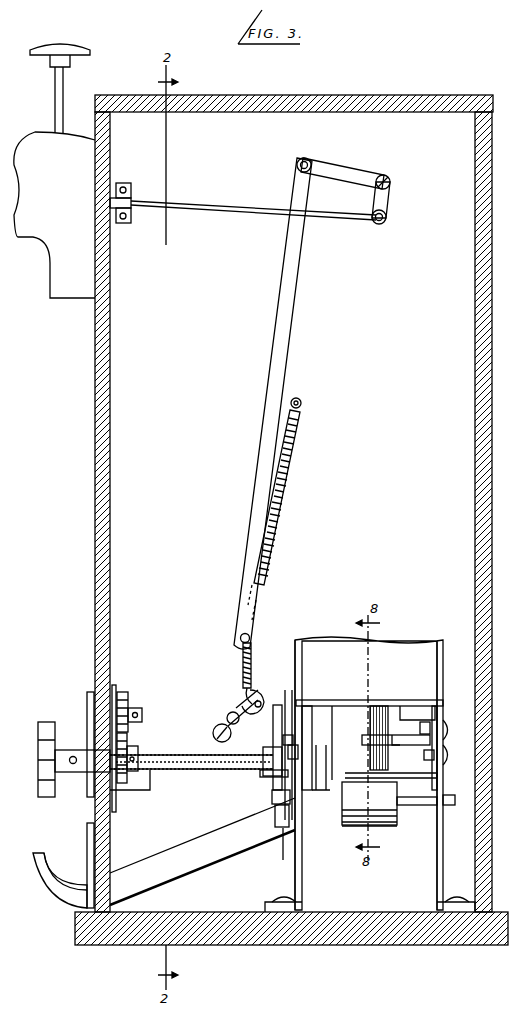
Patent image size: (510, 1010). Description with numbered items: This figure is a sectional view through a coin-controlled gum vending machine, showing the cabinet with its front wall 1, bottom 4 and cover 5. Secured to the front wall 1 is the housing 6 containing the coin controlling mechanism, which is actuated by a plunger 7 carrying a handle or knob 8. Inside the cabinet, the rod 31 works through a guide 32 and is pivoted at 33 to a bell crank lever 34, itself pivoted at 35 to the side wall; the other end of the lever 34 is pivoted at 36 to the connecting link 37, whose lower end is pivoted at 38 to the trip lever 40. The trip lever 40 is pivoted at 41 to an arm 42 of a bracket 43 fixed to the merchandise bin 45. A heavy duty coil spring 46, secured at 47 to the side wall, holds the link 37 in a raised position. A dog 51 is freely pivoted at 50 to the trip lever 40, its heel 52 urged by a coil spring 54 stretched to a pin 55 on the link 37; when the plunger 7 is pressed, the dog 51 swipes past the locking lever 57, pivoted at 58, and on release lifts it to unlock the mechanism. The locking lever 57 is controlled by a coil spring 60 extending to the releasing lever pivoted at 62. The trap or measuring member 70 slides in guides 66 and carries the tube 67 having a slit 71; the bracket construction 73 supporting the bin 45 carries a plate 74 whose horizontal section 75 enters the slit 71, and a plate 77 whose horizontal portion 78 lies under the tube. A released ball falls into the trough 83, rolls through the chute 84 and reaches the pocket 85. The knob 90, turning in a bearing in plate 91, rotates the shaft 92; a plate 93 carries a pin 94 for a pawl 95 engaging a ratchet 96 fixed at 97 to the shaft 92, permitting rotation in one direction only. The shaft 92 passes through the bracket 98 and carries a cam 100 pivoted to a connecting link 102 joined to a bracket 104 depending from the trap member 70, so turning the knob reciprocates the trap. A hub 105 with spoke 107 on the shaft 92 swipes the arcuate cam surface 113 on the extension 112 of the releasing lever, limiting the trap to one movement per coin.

The front wall 1 is at (95, 412).
The bottom 4 is at (318, 932).
The cover 5 is at (322, 104).
The housing 6 is at (50, 262).
The plunger 7 is at (55, 95).
The handle or knob 8 is at (44, 40).
The rod 31 is at (228, 203).
The guide 32 is at (130, 190).
The pivot 33 is at (384, 224).
The bell crank lever 34 is at (355, 170).
The pivot 35 is at (390, 182).
The pivot 36 is at (297, 165).
The connecting link 37 is at (290, 318).
The pivot 38 is at (229, 712).
The trip lever 40 is at (232, 710).
The pivot 41 is at (213, 731).
The arm 42 is at (222, 756).
The bracket 43 is at (212, 784).
The merchandise bin 45 is at (443, 662).
The heavy duty coil spring 46 is at (290, 468).
The securing point 47 is at (300, 398).
The pivot 50 is at (264, 702).
The dog 51 is at (252, 690).
The heel 52 is at (262, 706).
The coil spring 54 is at (252, 660).
The pin 55 is at (240, 637).
The locking lever 57 is at (292, 725).
The pivot 58 is at (282, 715).
The coil spring 60 is at (296, 752).
The pivot 62 is at (280, 818).
The guides 66 is at (412, 710).
The tube 67 is at (372, 810).
The trap or measuring member 70 is at (380, 710).
The slit 71 is at (365, 737).
The bracket construction 73 is at (436, 845).
The plate 74 is at (430, 728).
The horizontally disposed section 75 is at (395, 745).
The plate 77 is at (443, 760).
The horizontally disposed portion 78 is at (400, 778).
The trough 83 is at (397, 818).
The chute 84 is at (210, 862).
The cup or pocket 85 is at (50, 870).
The knob 90 is at (38, 740).
The plate 91 is at (87, 700).
The shaft 92 is at (188, 770).
The plate 93 is at (114, 690).
The pin 94 is at (142, 712).
The pawl 95 is at (126, 706).
The ratchet 96 is at (124, 783).
The securing point 97 is at (156, 752).
The bracket 98 is at (298, 884).
The cam 100 is at (322, 792).
The connecting link 102 is at (333, 782).
The bracket 104 is at (294, 738).
The hub 105 is at (266, 750).
The spoke 107 is at (262, 772).
The extension 112 is at (285, 840).
The arcuate cam surface 113 is at (273, 797).